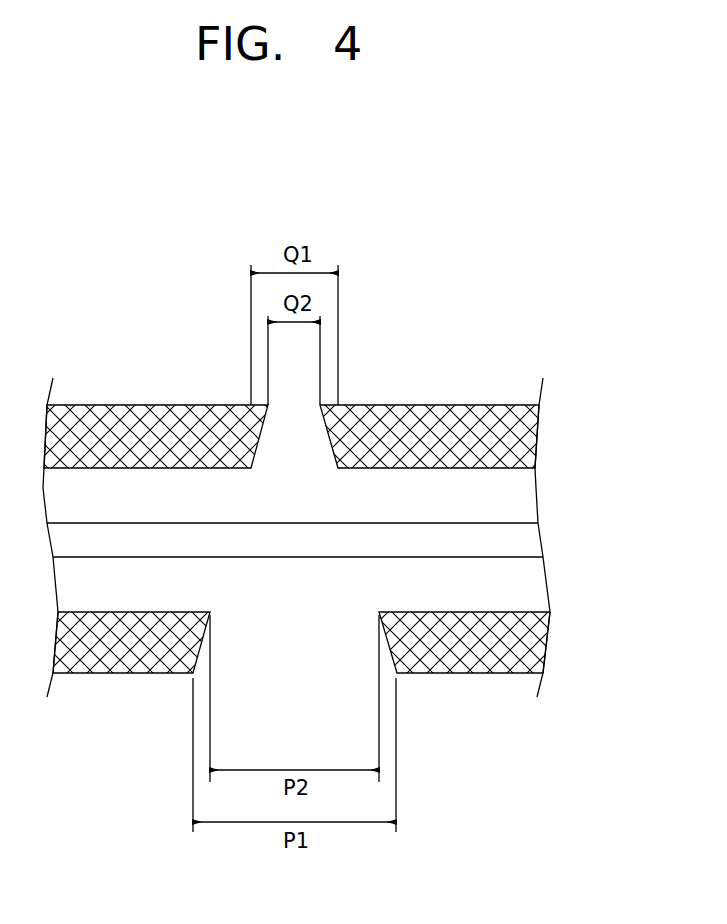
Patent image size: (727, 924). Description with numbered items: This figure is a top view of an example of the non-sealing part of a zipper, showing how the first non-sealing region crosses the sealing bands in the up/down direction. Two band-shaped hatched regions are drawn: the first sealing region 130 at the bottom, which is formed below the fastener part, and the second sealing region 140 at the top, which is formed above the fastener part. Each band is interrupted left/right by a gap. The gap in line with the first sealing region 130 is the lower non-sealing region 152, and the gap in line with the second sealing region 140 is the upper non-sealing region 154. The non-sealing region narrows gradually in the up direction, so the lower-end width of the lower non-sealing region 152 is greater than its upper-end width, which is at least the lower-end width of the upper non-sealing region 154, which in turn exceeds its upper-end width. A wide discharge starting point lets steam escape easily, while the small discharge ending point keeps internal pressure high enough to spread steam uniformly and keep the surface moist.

The first sealing region 130 is at (533, 650).
The second sealing region 140 is at (519, 440).
The (1-1)th non-sealing region 152 is at (306, 651).
The (1-2)th non-sealing region 154 is at (283, 435).